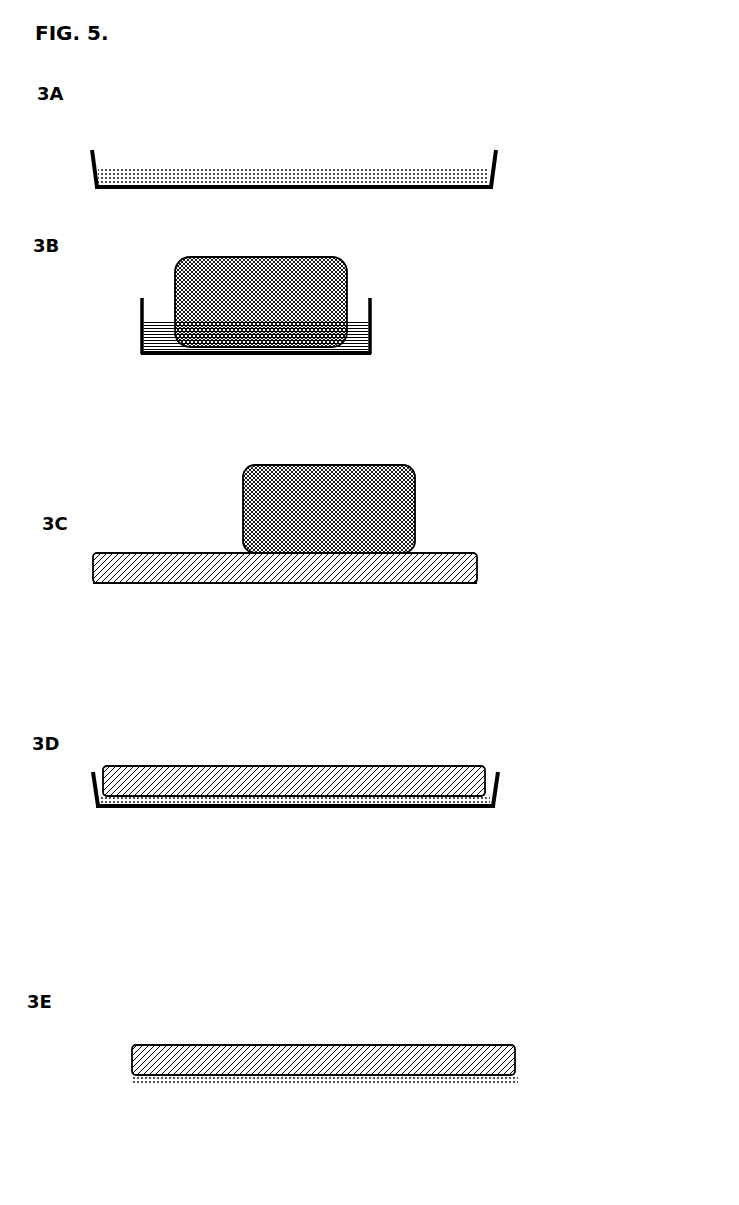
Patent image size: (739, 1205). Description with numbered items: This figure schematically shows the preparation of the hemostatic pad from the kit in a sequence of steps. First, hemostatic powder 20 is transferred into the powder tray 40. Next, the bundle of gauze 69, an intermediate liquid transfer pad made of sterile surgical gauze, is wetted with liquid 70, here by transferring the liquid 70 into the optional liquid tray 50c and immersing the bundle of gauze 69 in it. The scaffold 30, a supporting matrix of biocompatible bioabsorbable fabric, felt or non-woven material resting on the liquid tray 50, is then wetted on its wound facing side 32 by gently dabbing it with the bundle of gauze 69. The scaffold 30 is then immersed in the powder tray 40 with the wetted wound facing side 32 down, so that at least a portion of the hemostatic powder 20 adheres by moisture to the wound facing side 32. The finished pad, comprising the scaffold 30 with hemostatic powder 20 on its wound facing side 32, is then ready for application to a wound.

The hemostatic powder 20 is at (343, 172).
The powder tray 40 is at (493, 180).
The bundle of gauze 69 is at (338, 285).
The liquid 70 is at (355, 338).
The optional liquid tray 50c is at (263, 355).
The scaffold 30 is at (438, 567).
The wound facing side 32 is at (170, 553).
The liquid tray 50 is at (477, 573).